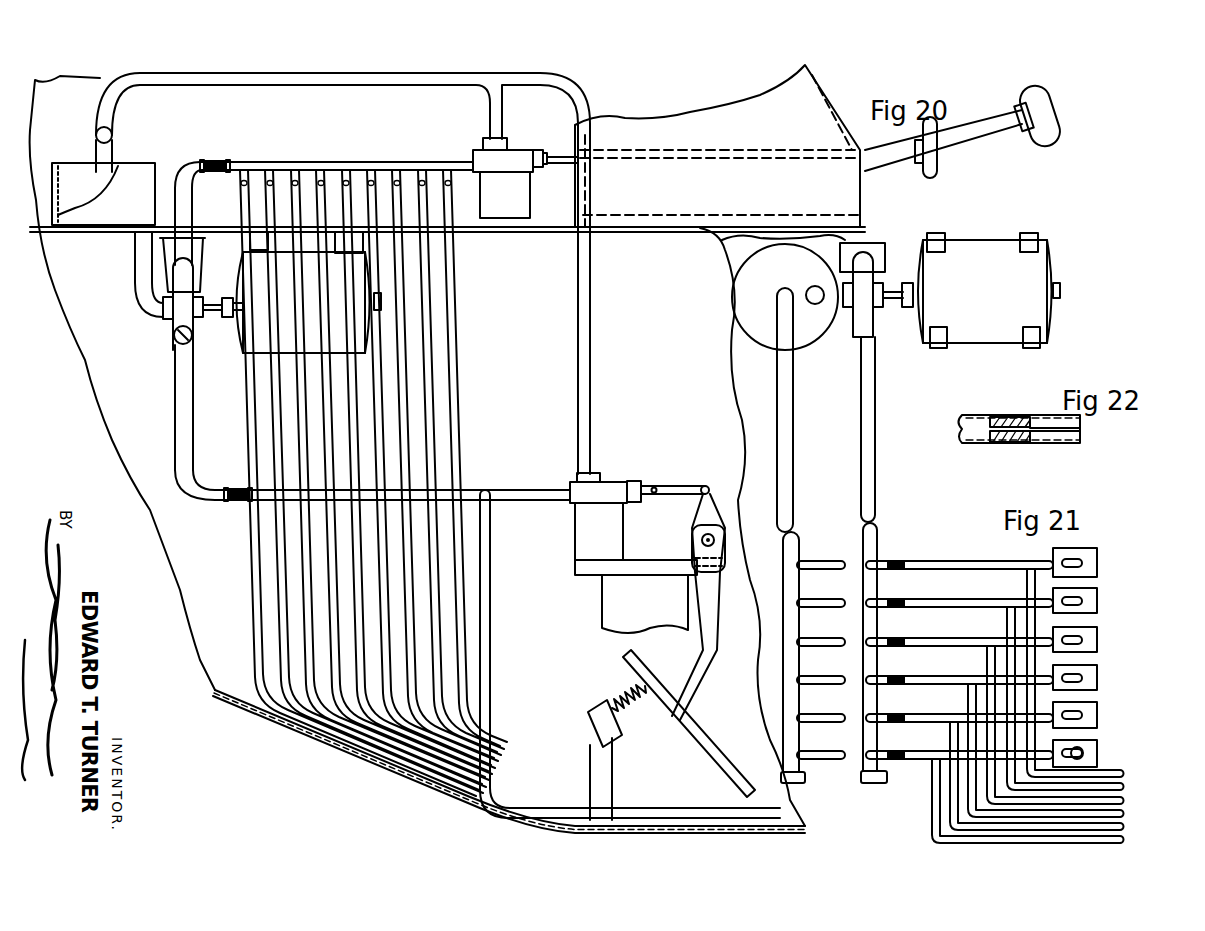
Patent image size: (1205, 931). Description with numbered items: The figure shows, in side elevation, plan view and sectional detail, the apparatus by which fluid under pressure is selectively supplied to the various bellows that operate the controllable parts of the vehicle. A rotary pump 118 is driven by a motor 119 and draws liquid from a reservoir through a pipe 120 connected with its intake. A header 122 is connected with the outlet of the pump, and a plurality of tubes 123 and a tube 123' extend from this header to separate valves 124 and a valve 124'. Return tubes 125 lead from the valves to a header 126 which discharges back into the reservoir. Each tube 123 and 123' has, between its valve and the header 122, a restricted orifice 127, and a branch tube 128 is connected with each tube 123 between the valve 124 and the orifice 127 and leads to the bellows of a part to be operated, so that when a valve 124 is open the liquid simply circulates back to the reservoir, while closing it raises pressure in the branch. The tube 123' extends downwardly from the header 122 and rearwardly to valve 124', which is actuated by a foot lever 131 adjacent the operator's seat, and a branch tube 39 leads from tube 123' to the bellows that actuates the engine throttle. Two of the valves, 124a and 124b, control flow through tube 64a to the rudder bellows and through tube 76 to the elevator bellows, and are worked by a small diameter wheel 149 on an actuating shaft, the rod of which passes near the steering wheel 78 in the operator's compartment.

In FIG. 20, the branch tube 39 is at (487, 663).
In FIG. 21, the tube 64a is at (1117, 838).
In FIG. 21, the fluid supply tube 76 is at (1120, 818).
In FIG. 20, the steering wheel 78 is at (1042, 138).
In FIG. 20, the rotary pump 118 is at (178, 317).
In FIG. 20, the motor 119 is at (240, 350).
In FIG. 20, the pipe 120 is at (140, 287).
In FIG. 20, the header 122 is at (173, 347).
In FIG. 20, the tubes 123 is at (324, 183).
In FIG. 21, the tubes 123 is at (959, 638).
In FIG. 22, the tubes 123 is at (1020, 450).
In FIG. 20, the tube 123' is at (355, 493).
In FIG. 20, the valves 124 is at (525, 156).
In FIG. 21, the valves 124 is at (1112, 608).
In FIG. 20, the valve 124' is at (639, 535).
In FIG. 21, the valve 124a is at (1088, 750).
In FIG. 21, the valve 124b is at (1087, 716).
In FIG. 20, the return tubes 125 is at (487, 88).
In FIG. 21, the return tubes 125 is at (850, 575).
In FIG. 20, the header 126 is at (108, 130).
In FIG. 20, the restricted orifice 127 is at (224, 160).
In FIG. 21, the restricted orifice 127 is at (895, 603).
In FIG. 22, the restricted orifice 127 is at (1010, 415).
In FIG. 20, the branch tube 128 is at (452, 433).
In FIG. 21, the branch tube 128 is at (1010, 622).
In FIG. 20, the foot lever 131 is at (707, 650).
In FIG. 20, the wheel 149 is at (935, 168).